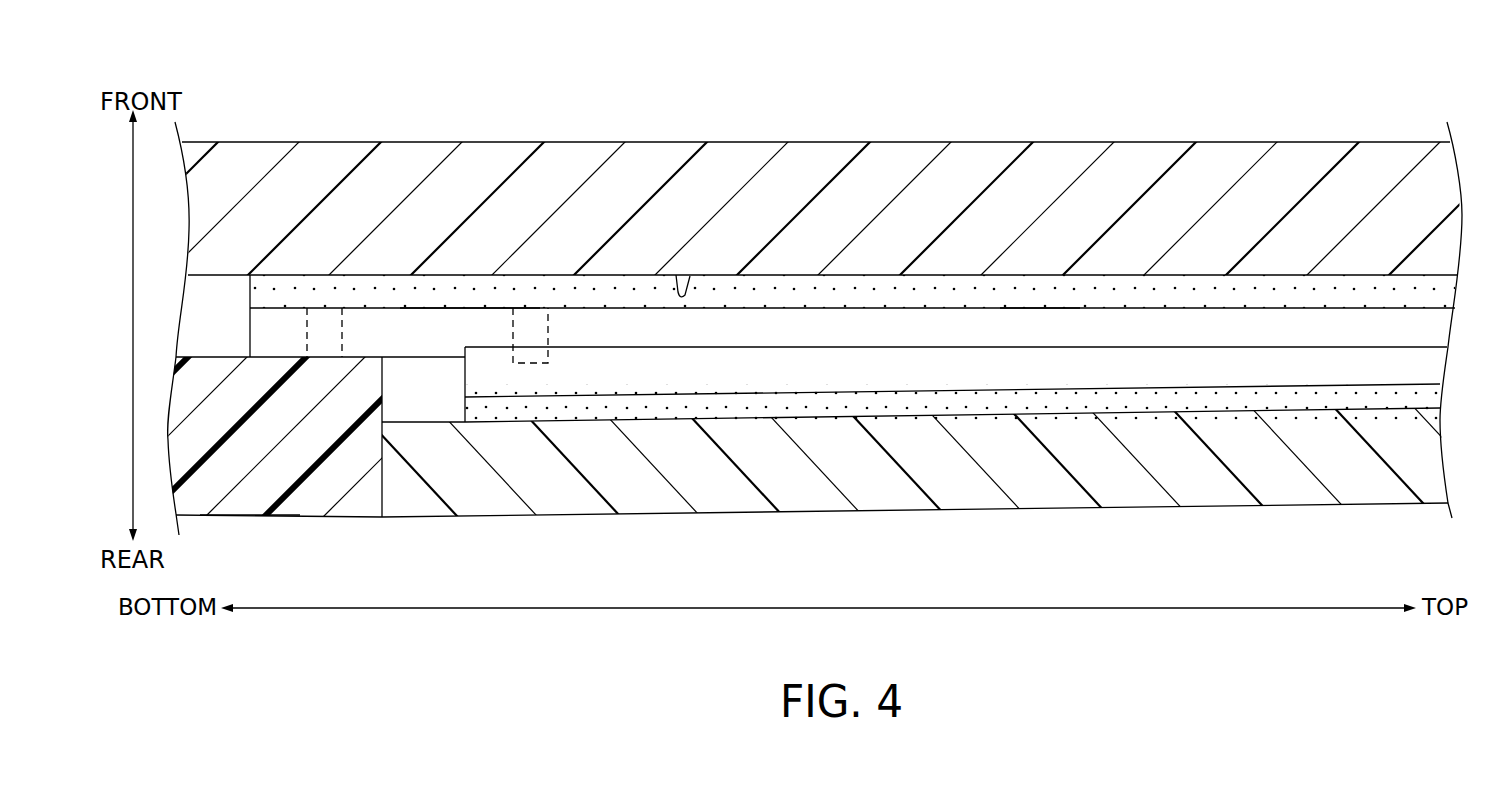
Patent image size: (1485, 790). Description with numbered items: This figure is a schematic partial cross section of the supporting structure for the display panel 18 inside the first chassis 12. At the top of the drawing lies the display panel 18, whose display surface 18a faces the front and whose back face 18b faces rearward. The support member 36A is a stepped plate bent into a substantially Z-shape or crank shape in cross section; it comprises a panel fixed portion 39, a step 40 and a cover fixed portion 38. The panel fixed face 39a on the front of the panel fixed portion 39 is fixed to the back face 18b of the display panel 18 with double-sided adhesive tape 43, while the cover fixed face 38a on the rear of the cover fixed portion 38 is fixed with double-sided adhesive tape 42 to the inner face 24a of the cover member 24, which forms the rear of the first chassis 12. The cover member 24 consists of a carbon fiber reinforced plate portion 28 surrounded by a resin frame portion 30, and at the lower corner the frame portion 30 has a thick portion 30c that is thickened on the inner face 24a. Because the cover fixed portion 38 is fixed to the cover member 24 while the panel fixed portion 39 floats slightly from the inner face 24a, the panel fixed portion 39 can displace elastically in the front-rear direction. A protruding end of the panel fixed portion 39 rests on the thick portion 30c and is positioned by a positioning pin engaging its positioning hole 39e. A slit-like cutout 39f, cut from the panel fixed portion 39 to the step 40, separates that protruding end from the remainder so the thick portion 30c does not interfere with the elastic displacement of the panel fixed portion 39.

The first chassis 12 is at (168, 46).
The display panel 18 is at (1112, 138).
The display surface 18a is at (943, 142).
The back face of the display panel 18b is at (690, 276).
The support member 36A is at (1262, 298).
The double-sided adhesive tape 43 is at (1040, 298).
The panel fixed portion 39 is at (856, 335).
The panel fixed face 39a is at (468, 302).
The positioning hole 39e is at (324, 302).
The cutout 39f is at (550, 318).
The step 40 is at (770, 347).
The cover fixed portion 38 is at (812, 380).
The cover fixed face 38a is at (718, 397).
The cover member 24 is at (600, 523).
The inner face of the cover member 24a is at (921, 450).
The double-sided adhesive tape 42 is at (1008, 402).
The plate portion 28 is at (1262, 513).
The frame portion 30 is at (344, 524).
The thick portion 30c is at (243, 500).